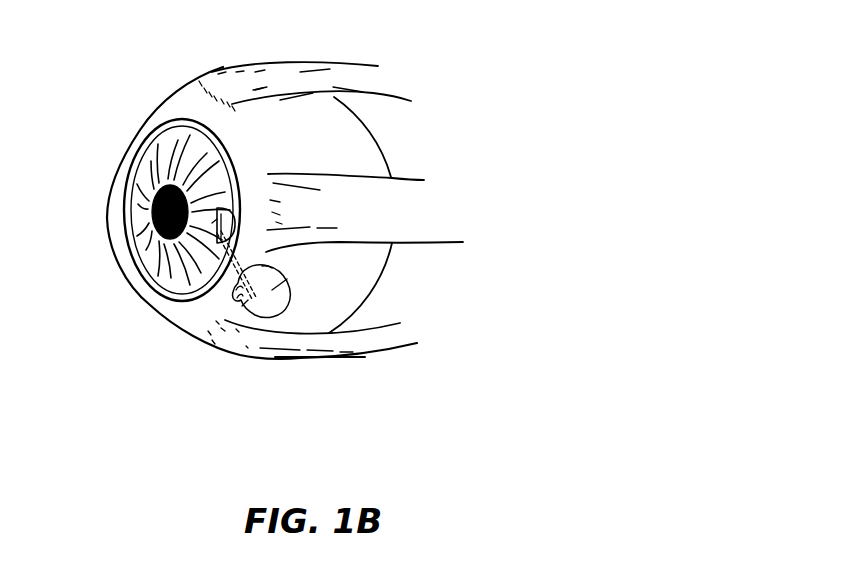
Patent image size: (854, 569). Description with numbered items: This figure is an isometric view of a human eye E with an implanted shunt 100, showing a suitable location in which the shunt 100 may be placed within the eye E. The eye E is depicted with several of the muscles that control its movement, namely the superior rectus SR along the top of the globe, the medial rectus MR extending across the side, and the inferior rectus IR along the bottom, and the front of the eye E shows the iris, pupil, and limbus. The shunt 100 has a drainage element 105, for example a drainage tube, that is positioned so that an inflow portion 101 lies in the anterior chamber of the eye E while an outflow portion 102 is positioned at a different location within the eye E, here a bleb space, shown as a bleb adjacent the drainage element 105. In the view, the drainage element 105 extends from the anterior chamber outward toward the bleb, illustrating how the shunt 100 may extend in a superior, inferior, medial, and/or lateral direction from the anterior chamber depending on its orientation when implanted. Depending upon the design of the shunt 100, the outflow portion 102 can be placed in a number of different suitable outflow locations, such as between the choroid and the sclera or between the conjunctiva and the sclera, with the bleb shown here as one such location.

The eye E is at (153, 86).
The superior rectus SR is at (314, 83).
The medial rectus MR is at (366, 212).
The inferior rectus IR is at (330, 335).
The bleb space bleb is at (272, 290).
The shunt 100 is at (243, 212).
The inflow portion 101 is at (214, 221).
The outflow portion 102 is at (243, 306).
The drainage element 105 is at (232, 263).